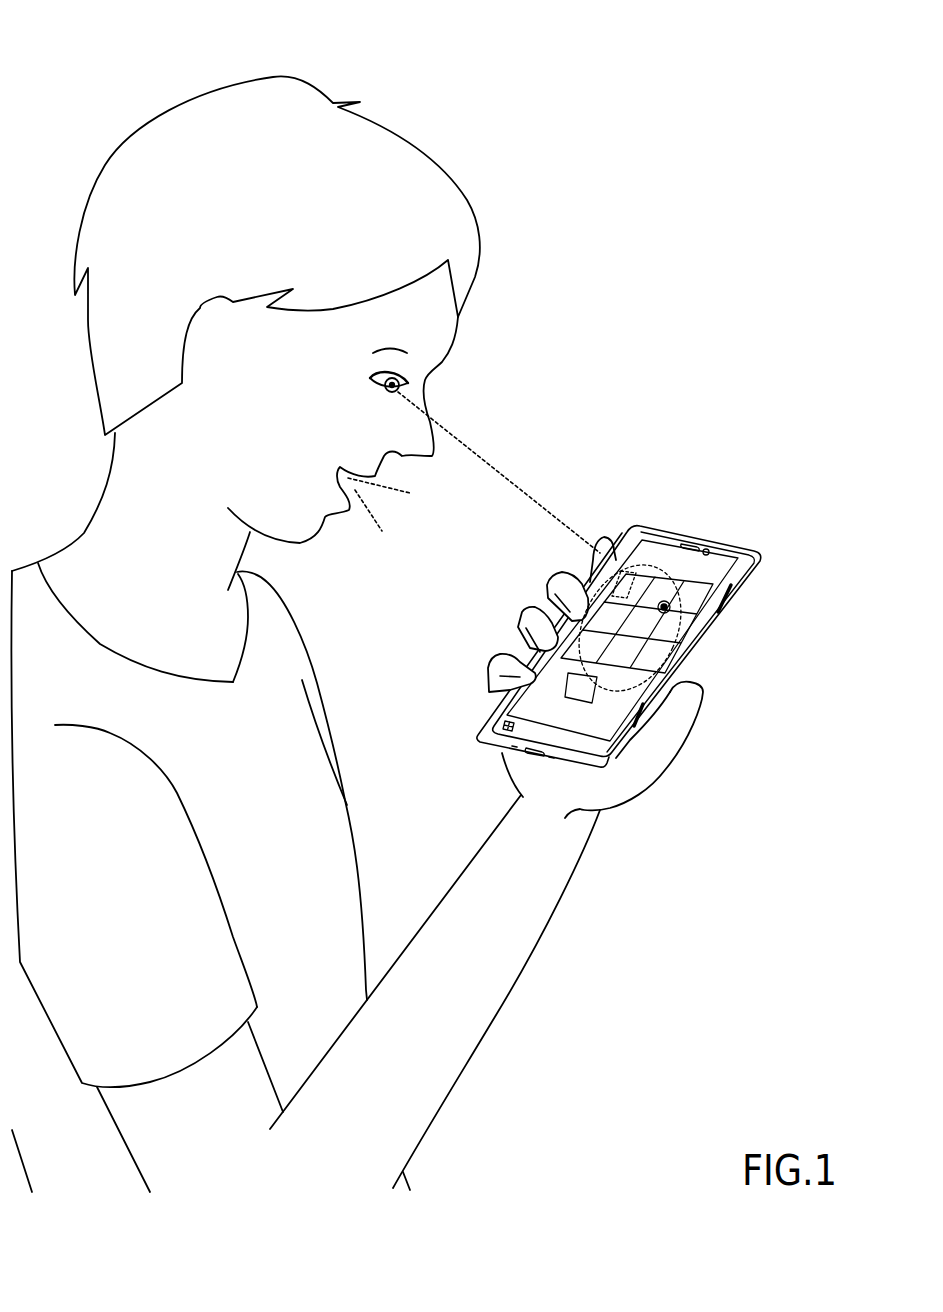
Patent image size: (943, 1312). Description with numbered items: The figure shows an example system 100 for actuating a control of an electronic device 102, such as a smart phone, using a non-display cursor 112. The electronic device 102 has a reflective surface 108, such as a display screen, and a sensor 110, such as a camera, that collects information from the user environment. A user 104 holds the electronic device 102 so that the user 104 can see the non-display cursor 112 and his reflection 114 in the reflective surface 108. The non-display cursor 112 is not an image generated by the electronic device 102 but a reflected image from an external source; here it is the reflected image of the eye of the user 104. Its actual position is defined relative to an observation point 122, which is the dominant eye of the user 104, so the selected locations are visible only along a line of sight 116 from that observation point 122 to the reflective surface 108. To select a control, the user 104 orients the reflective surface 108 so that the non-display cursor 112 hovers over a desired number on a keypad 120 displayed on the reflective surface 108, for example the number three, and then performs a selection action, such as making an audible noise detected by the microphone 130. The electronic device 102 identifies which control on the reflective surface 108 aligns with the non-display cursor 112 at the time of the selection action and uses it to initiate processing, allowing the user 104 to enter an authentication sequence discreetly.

The system 100 is at (103, 62).
The electronic device 102 is at (710, 669).
The user 104 is at (103, 165).
The reflective surface 108 is at (723, 570).
The sensor 110 is at (708, 551).
The non-display cursor 112 is at (666, 601).
The reflection 114 is at (652, 565).
The line of sight 116 is at (528, 500).
The keypad 120 is at (544, 590).
The observation point 122 is at (405, 385).
The microphone 130 is at (515, 748).